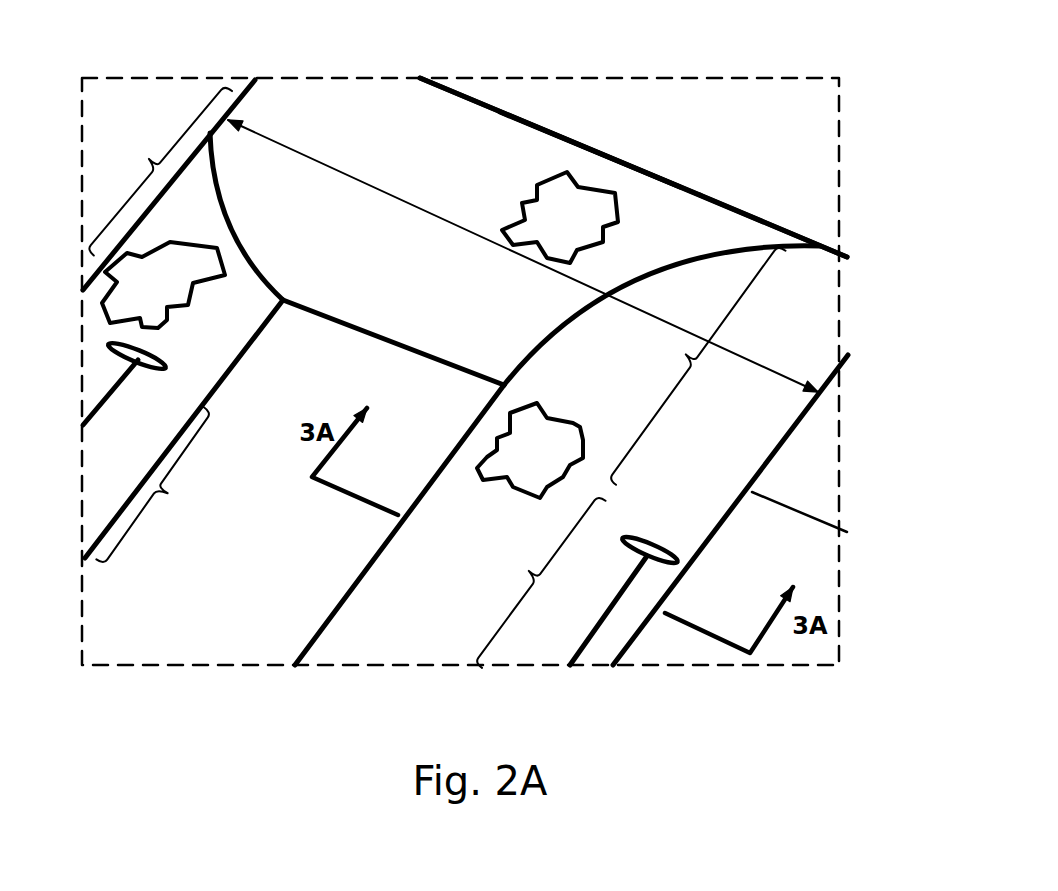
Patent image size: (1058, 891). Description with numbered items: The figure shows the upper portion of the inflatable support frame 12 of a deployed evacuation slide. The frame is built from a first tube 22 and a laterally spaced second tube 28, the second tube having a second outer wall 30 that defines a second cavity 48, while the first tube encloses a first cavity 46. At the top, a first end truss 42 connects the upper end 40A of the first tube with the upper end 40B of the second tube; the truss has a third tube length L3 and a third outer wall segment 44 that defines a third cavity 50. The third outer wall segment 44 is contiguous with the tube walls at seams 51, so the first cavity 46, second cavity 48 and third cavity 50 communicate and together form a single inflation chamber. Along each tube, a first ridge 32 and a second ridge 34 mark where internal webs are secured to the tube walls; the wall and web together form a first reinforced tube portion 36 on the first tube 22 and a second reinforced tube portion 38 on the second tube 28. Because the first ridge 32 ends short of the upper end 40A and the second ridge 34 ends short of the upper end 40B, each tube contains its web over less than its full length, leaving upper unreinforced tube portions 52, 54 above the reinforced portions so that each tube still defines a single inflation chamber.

The inflatable support frame 12 is at (775, 155).
The first tube 22 is at (702, 558).
The second tube 28 is at (199, 429).
The second outer wall 30 is at (217, 345).
The first ridge 32 is at (598, 622).
The second ridge 34 is at (115, 392).
The first reinforced tube portion 36 is at (450, 526).
The second reinforced tube portion 38 is at (152, 484).
The upper end of first tube 40A is at (797, 235).
The upper end of second tube 40B is at (453, 91).
The first end truss 42 is at (660, 175).
The third outer wall segment 44 is at (442, 135).
The first cavity 46 is at (533, 442).
The second cavity 48 is at (167, 275).
The third cavity 50 is at (583, 230).
The seam 51 is at (257, 260).
The upper unreinforced tube portion 52 is at (698, 366).
The upper unreinforced tube portion 54 is at (169, 185).
The third tube length L3 is at (452, 223).